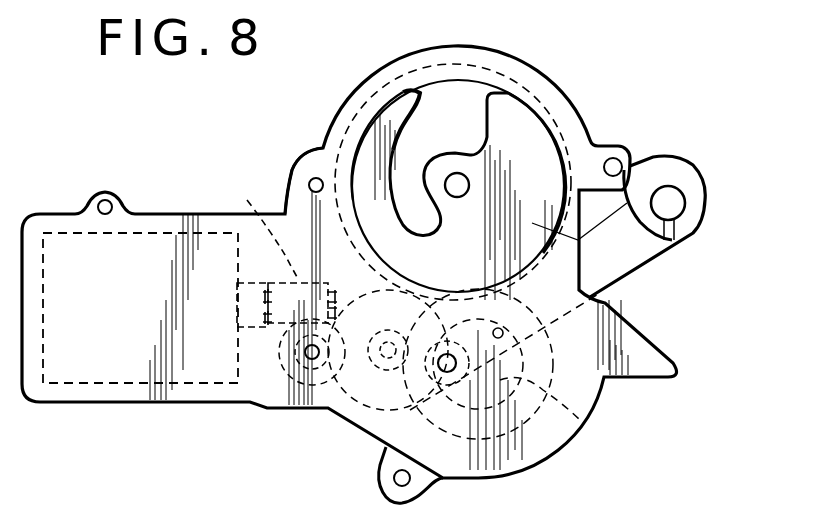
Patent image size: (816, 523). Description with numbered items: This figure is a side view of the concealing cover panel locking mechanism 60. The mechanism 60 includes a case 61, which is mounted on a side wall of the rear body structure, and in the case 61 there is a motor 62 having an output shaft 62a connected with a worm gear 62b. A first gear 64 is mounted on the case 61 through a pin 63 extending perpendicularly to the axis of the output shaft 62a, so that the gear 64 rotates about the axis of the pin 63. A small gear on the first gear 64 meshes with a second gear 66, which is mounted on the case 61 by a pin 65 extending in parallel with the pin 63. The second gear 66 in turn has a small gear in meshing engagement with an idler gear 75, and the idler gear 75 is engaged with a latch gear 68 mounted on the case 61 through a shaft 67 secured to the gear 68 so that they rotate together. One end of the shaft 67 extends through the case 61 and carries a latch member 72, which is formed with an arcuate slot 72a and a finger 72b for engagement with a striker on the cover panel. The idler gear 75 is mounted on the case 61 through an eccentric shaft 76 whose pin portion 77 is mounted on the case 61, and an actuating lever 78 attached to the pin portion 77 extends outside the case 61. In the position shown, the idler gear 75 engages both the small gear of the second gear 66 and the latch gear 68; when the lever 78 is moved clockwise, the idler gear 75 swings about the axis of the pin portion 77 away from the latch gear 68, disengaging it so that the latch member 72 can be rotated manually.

The concealing cover panel locking mechanism 60 is at (162, 170).
The case 61 is at (307, 230).
The motor 62 is at (88, 236).
The output shaft 62a is at (267, 303).
The worm gear 62b is at (254, 222).
The pin 63 is at (282, 405).
The first gear 64 is at (283, 372).
The pin 65 is at (378, 372).
The second gear 66 is at (343, 402).
The shaft 67 is at (467, 183).
The latch gear 68 is at (463, 100).
The latch member 72 is at (600, 285).
The arcuate slot 72a is at (412, 153).
The finger 72b is at (367, 138).
The idler gear 75 is at (555, 447).
The eccentric shaft 76 is at (582, 422).
The pin portion 77 is at (449, 373).
The actuating lever 78 is at (673, 177).